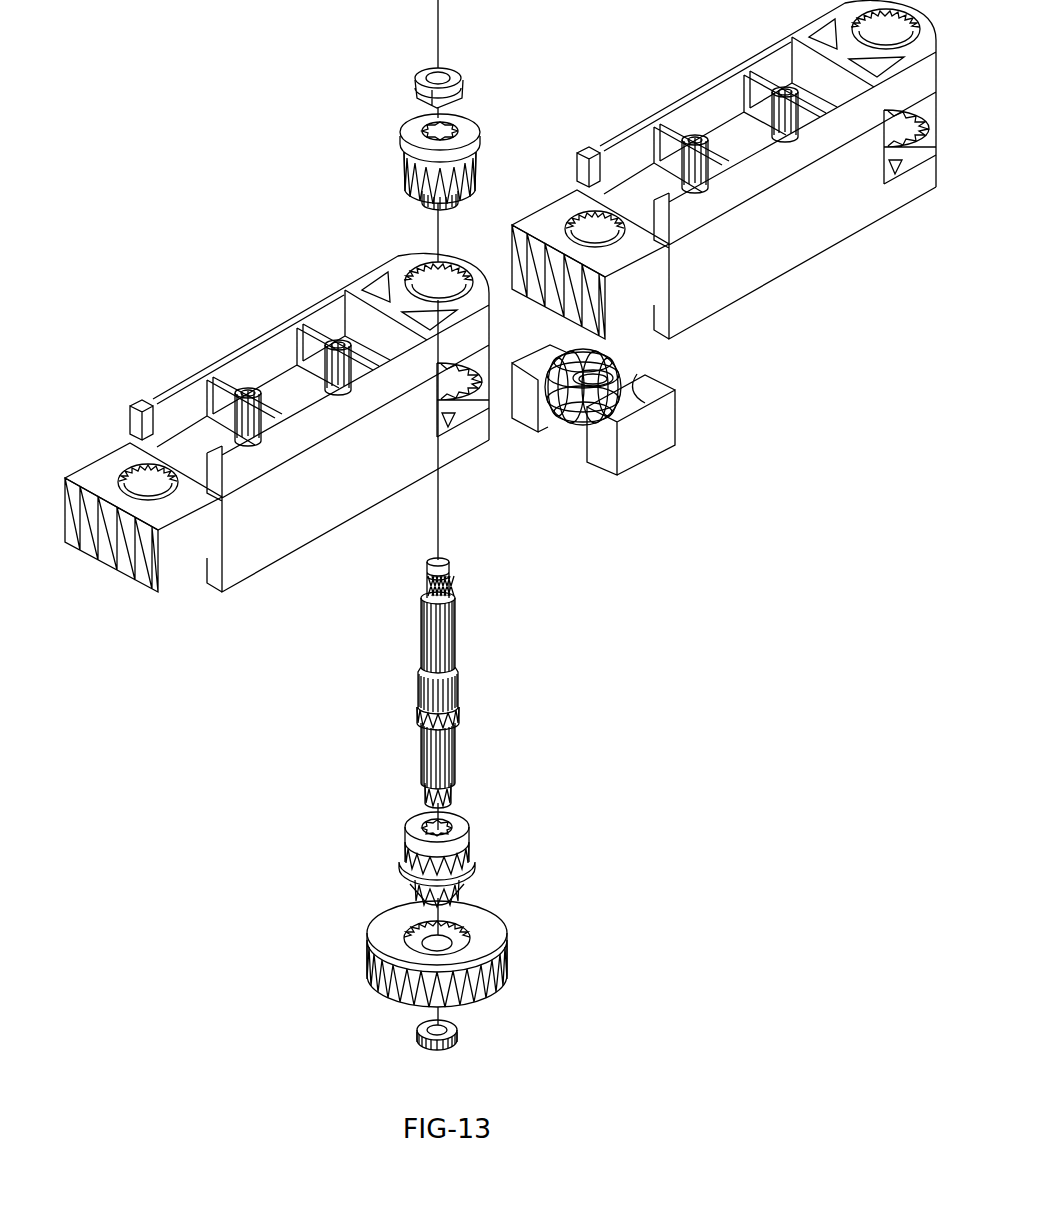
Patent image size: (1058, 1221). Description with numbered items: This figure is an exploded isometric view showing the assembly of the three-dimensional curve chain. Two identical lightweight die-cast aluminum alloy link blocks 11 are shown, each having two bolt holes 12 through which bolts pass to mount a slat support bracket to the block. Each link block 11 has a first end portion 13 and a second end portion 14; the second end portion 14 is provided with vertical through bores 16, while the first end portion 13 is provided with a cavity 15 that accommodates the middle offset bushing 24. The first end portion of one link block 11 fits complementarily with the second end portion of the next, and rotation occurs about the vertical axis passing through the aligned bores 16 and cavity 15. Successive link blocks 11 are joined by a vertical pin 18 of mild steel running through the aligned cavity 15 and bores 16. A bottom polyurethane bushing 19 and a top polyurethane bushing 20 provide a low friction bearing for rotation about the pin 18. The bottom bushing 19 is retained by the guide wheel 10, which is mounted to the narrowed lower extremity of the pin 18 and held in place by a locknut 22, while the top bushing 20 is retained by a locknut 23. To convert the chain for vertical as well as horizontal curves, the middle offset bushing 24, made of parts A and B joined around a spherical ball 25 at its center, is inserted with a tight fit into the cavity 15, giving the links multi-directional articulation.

The guide wheel 10 is at (513, 970).
The link block 11 is at (293, 527).
The bolt holes 12 is at (778, 88).
The first end portion 13 is at (175, 540).
The second end portion 14 is at (463, 437).
The cavity 15 is at (120, 470).
The vertical through bores 16 is at (442, 262).
The vertical pin 18 is at (455, 705).
The bottom polyurethane bushing 19 is at (473, 833).
The top polyurethane bushing 20 is at (480, 132).
The locknut 22 is at (458, 1053).
The locknut 23 is at (465, 82).
The middle offset bushing 24 is at (550, 430).
The spherical ball 25 is at (620, 367).